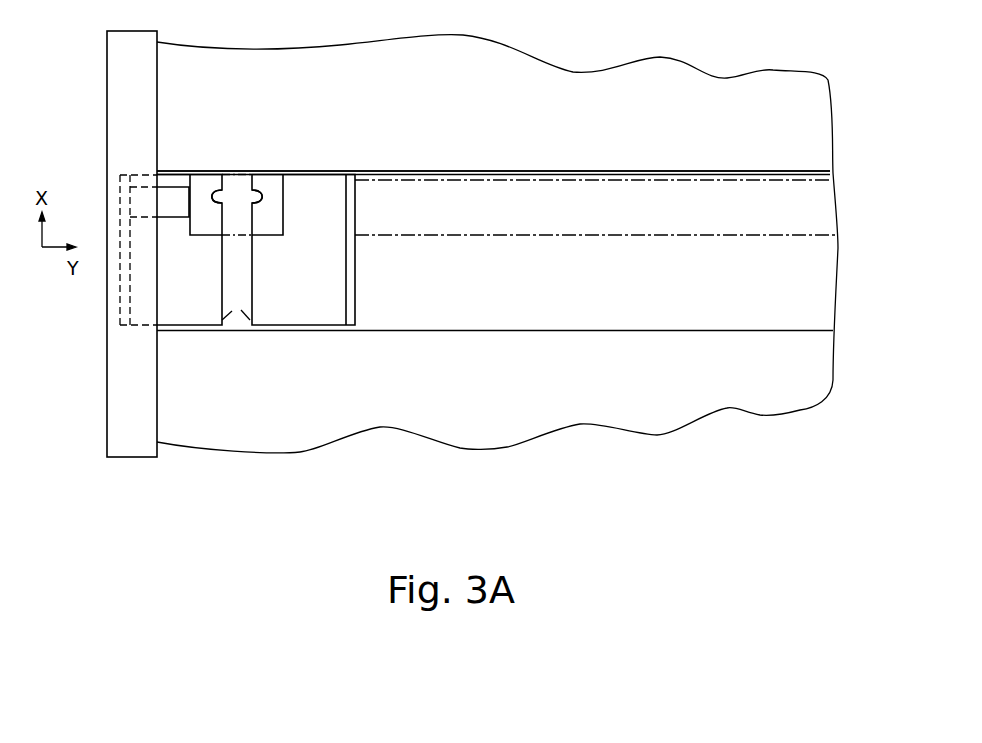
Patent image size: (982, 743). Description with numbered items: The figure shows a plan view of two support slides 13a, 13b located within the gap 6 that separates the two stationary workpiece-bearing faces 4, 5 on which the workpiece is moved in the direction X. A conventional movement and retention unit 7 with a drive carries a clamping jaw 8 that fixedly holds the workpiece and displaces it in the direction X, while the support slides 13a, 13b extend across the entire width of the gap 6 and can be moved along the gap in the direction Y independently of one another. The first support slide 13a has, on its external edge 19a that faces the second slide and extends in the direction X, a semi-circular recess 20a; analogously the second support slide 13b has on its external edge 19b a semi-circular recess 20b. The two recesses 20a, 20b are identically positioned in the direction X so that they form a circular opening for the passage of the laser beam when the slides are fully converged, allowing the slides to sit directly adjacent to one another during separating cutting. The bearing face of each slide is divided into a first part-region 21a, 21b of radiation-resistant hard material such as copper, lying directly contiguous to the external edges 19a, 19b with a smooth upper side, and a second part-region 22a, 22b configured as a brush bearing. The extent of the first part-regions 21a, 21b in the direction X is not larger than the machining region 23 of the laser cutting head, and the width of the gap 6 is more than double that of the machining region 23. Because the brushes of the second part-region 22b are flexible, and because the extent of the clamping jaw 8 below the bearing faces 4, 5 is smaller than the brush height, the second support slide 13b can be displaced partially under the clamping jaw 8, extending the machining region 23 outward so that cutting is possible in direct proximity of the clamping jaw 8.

The workpiece-bearing face 4 is at (577, 407).
The workpiece-bearing face 5 is at (365, 63).
The gap 6 is at (743, 316).
The movement and retention unit 7 is at (122, 78).
The clamping jaw 8 is at (150, 203).
The first support slide 13a is at (300, 333).
The second support slide 13b is at (137, 340).
The external edge 19a is at (245, 330).
The external edge 19b is at (230, 330).
The semi-circular recess 20a is at (250, 187).
The semi-circular recess 20b is at (222, 190).
The first part-region 21a is at (272, 187).
The first part-region 21b is at (203, 188).
The second part-region 22a is at (325, 303).
The second part-region 22b is at (143, 302).
The machining region 23 is at (593, 203).